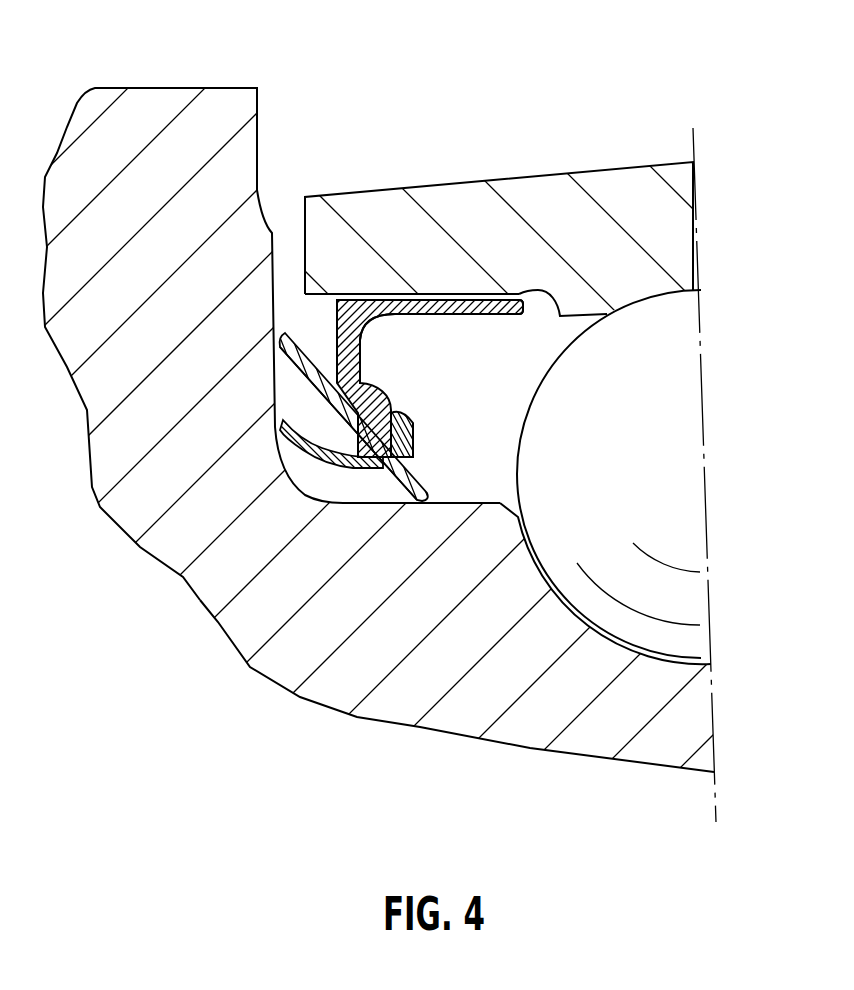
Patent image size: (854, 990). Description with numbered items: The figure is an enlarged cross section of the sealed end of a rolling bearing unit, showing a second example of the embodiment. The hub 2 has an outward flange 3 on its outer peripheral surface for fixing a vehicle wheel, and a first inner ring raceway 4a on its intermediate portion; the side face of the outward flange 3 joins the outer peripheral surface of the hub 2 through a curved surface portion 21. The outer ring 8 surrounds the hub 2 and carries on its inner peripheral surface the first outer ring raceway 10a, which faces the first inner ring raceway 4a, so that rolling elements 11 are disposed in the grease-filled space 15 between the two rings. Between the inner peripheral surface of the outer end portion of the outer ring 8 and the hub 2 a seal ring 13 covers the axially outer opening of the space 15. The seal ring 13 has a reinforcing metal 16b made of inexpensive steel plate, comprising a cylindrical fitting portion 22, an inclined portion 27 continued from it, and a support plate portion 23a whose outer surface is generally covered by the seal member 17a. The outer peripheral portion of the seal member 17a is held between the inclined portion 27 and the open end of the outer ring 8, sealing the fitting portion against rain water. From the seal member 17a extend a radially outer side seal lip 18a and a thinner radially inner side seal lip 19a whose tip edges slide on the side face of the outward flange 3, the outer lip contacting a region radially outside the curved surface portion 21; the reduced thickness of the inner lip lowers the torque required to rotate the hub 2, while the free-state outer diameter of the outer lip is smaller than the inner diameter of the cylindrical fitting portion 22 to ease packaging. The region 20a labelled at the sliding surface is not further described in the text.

The hub 2 is at (410, 712).
The outward flange 3 is at (230, 104).
The first inner ring raceway 4a is at (647, 652).
The outer ring 8 is at (578, 217).
The first outer ring raceway 10a is at (633, 302).
The rolling elements 11 is at (667, 416).
The seal ring 13 is at (308, 324).
The space 15 is at (520, 352).
The reinforcing metal 16b is at (407, 397).
The seal member 17a is at (297, 383).
The radially outer side seal lip 18a is at (283, 362).
The radially inner side seal lip 19a is at (287, 443).
The sliding surface 20a is at (395, 503).
The curved surface portion 21 is at (327, 498).
The cylindrical fitting portion 22 is at (437, 300).
The support plate portion 23a is at (400, 413).
The inclined portion 27 is at (391, 316).